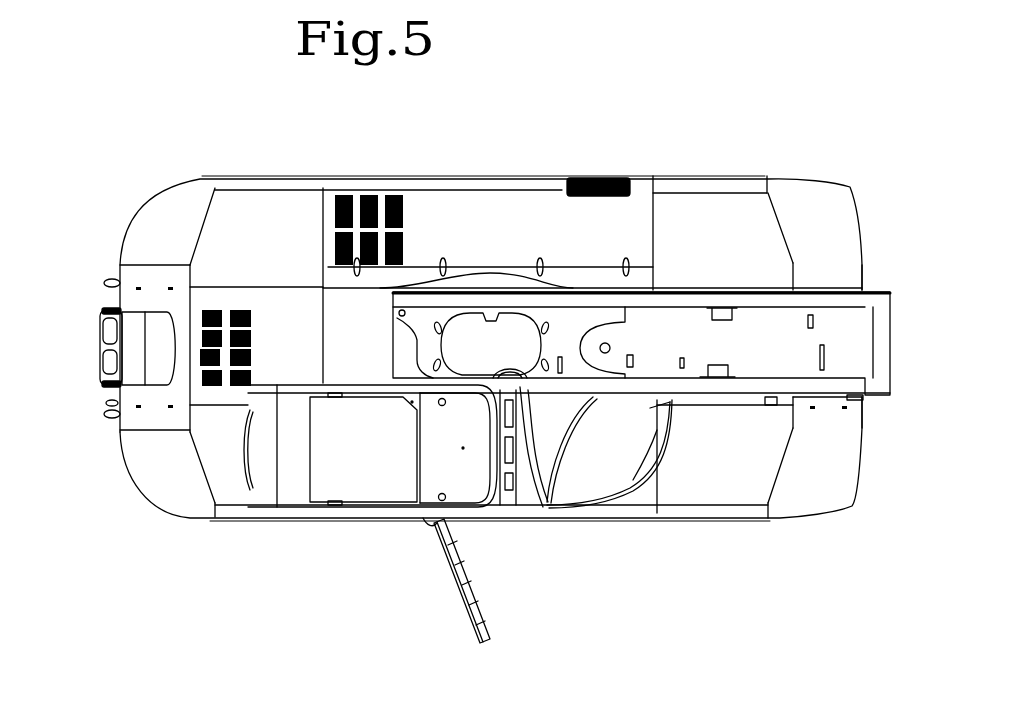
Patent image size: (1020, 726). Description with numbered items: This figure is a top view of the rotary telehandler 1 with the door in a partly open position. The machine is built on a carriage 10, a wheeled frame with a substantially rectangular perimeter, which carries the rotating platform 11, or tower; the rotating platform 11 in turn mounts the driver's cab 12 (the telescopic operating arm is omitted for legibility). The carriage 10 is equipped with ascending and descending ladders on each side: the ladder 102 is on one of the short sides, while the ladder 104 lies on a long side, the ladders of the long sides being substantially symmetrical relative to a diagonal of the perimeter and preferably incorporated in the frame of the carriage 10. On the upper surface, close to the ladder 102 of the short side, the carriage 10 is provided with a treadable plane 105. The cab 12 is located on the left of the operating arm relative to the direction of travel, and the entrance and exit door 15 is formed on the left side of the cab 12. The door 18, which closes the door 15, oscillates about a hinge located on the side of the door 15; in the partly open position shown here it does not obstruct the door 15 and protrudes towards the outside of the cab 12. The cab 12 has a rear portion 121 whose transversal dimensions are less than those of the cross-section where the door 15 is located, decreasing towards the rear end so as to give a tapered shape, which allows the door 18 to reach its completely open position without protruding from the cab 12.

The rotary telehandler 1 is at (764, 133).
The carriage 10 is at (460, 213).
The rotating platform 11 is at (580, 320).
The driver's cab 12 is at (292, 468).
The entrance and exit door 15 is at (368, 528).
The door 18 is at (457, 552).
The ladder 102 is at (133, 335).
The ladder 104 is at (575, 156).
The treadable plane 105 is at (247, 297).
The rear portion 121 is at (532, 516).